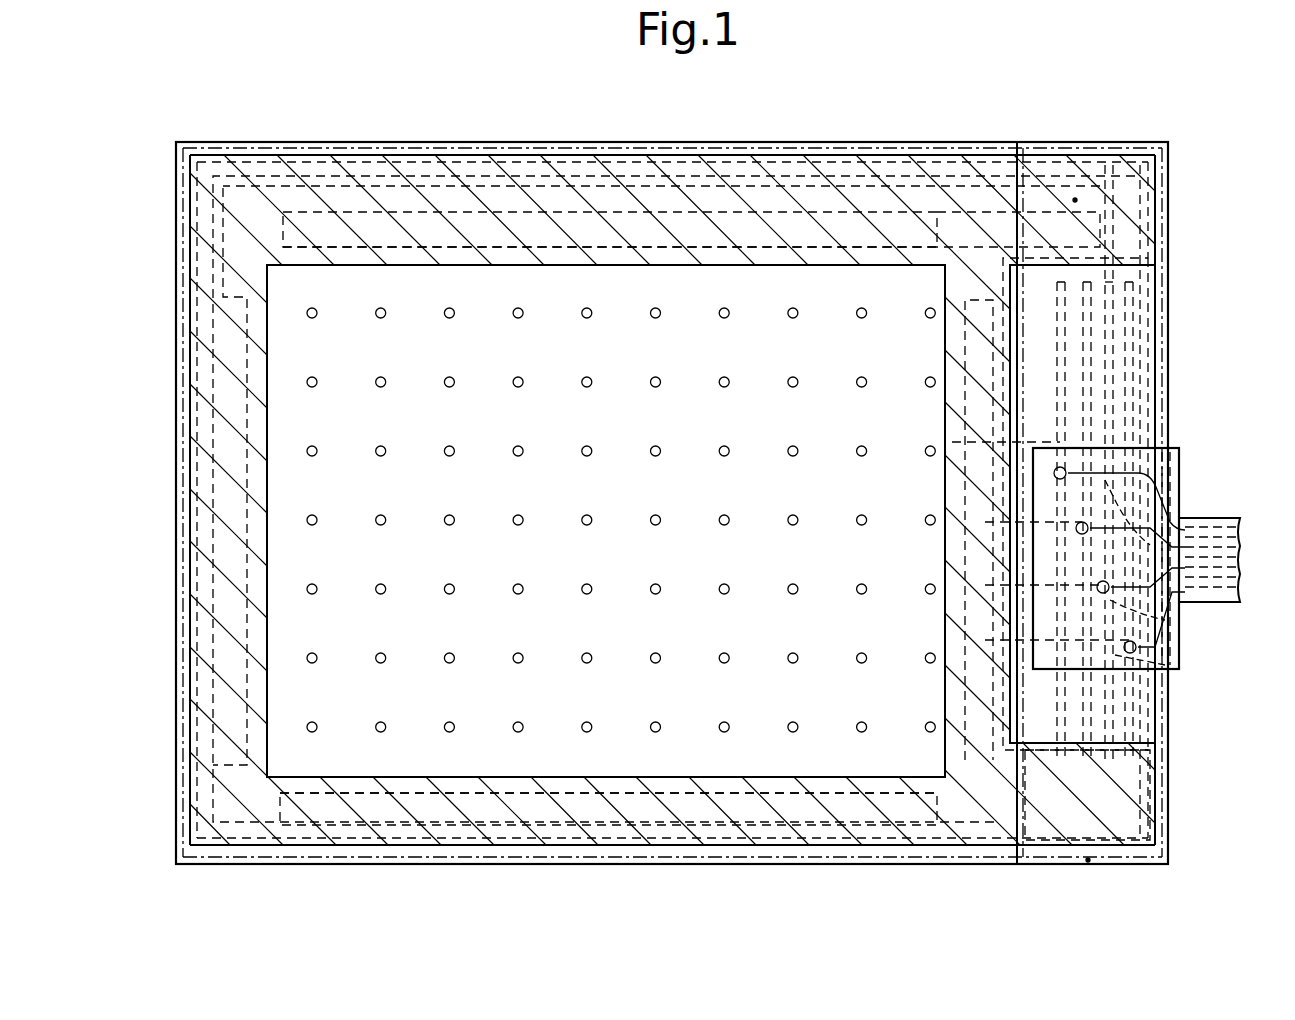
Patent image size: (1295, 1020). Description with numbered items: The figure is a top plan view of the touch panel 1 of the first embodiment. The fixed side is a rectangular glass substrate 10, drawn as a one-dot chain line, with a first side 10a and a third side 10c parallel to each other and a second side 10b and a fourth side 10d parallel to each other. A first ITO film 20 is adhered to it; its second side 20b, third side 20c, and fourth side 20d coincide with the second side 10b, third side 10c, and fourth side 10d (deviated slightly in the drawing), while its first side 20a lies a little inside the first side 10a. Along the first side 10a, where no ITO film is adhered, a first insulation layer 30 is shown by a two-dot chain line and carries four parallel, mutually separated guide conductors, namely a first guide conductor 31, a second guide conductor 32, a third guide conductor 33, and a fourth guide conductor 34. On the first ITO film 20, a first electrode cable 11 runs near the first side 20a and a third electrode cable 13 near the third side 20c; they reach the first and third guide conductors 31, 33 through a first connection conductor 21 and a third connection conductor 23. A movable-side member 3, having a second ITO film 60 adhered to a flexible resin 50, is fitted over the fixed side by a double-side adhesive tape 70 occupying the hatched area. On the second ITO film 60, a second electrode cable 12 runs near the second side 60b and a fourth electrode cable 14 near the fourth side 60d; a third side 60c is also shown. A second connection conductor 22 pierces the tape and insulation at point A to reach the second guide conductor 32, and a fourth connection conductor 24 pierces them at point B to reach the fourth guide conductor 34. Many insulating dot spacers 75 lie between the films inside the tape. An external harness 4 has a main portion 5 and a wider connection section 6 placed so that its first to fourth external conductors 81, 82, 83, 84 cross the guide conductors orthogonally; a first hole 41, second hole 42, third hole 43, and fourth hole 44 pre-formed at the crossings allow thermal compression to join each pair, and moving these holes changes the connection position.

The touch panel 1 is at (292, 120).
The glass substrate 10 is at (318, 136).
The first side 10a is at (1168, 378).
The second side 10b is at (638, 140).
The third side 10c is at (178, 382).
The fourth side 10d is at (608, 863).
The first ITO film 20 is at (196, 150).
The first side 20a is at (965, 272).
The second side 20b is at (815, 148).
The third side 20c is at (180, 285).
The fourth side 20d is at (742, 858).
The movable-side member 3 is at (678, 122).
The flexible resin 50 is at (665, 162).
The second ITO film 60 is at (785, 148).
The second side 60b is at (342, 160).
The third side 60c is at (196, 516).
The fourth side 60d is at (404, 845).
The third connection conductor 23 is at (425, 182).
The fourth connection conductor 24 is at (975, 832).
The third electrode cable 13 is at (252, 332).
The first electrode cable 11 is at (960, 347).
The second electrode cable 12 is at (557, 247).
The fourth electrode cable 14 is at (555, 793).
The second connection conductor 22 is at (976, 210).
The first connection conductor 21 is at (1045, 815).
The double-side adhesive tape 70 is at (274, 592).
The dot spacers 75 is at (455, 447).
The first insulation layer 30 is at (1142, 150).
The point A is at (1075, 198).
The point B is at (1090, 862).
The first guide conductor 31 is at (1155, 243).
The second guide conductor 32 is at (1135, 302).
The third guide conductor 33 is at (1135, 332).
The fourth guide conductor 34 is at (1112, 275).
The first hole 41 is at (1056, 465).
The second hole 42 is at (1140, 600).
The third hole 43 is at (1178, 672).
The fourth hole 44 is at (1155, 455).
The first external conductor 81 is at (962, 440).
The second external conductor 82 is at (985, 580).
The third external conductor 83 is at (985, 625).
The fourth external conductor 84 is at (985, 520).
The external harness 4 is at (1228, 428).
The main portion 5 is at (1200, 535).
The connection section 6 is at (1180, 465).